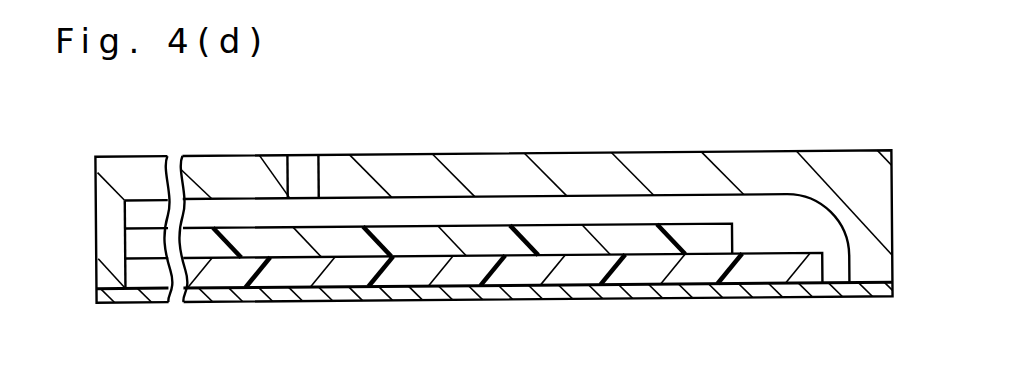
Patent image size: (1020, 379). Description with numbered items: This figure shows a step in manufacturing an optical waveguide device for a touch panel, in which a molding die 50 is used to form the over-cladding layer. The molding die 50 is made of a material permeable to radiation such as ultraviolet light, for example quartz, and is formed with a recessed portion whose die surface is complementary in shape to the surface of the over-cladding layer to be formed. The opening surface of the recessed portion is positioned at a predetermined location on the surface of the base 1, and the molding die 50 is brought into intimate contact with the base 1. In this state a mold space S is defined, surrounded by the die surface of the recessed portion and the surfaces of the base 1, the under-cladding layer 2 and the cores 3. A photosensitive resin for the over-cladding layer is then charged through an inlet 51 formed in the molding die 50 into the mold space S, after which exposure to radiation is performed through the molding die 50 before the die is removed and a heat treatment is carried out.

The base 1 is at (105, 292).
The under-cladding layer 2 is at (137, 265).
The cores 3 is at (137, 242).
The molding die 50 is at (230, 167).
The inlet 51 is at (317, 170).
The mold space S is at (418, 212).